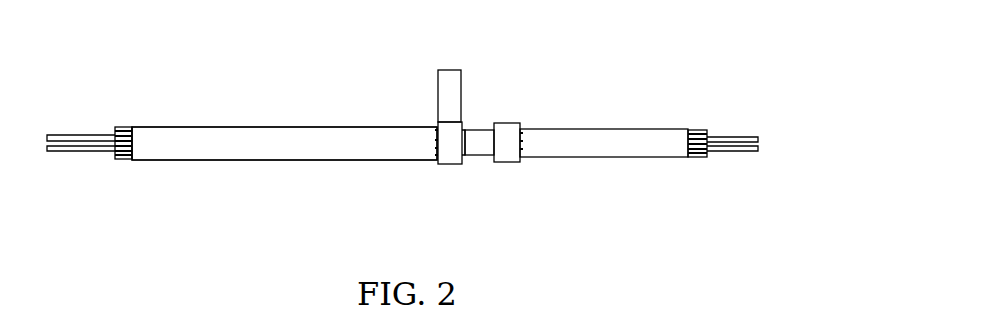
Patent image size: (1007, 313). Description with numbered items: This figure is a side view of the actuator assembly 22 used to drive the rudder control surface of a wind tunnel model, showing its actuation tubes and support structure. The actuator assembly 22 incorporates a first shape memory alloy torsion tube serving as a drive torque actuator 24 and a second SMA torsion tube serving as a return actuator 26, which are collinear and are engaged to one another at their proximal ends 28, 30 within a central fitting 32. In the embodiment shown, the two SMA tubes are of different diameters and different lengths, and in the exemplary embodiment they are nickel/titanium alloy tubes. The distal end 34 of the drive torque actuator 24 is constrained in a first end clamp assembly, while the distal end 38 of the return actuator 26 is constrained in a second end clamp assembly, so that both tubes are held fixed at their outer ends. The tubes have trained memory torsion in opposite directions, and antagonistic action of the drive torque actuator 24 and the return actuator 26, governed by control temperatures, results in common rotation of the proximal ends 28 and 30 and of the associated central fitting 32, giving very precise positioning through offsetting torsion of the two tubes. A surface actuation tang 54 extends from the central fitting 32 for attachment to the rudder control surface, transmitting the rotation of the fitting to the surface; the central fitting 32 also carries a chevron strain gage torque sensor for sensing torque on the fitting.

The actuator assembly 22 is at (399, 111).
The drive torque actuator 24 is at (307, 160).
The return actuator 26 is at (583, 157).
The proximal end 28 is at (433, 160).
The proximal end 30 is at (522, 143).
The central fitting 32 is at (473, 131).
The distal end 34 is at (119, 127).
The distal end 38 is at (693, 130).
The surface actuation tang 54 is at (448, 83).